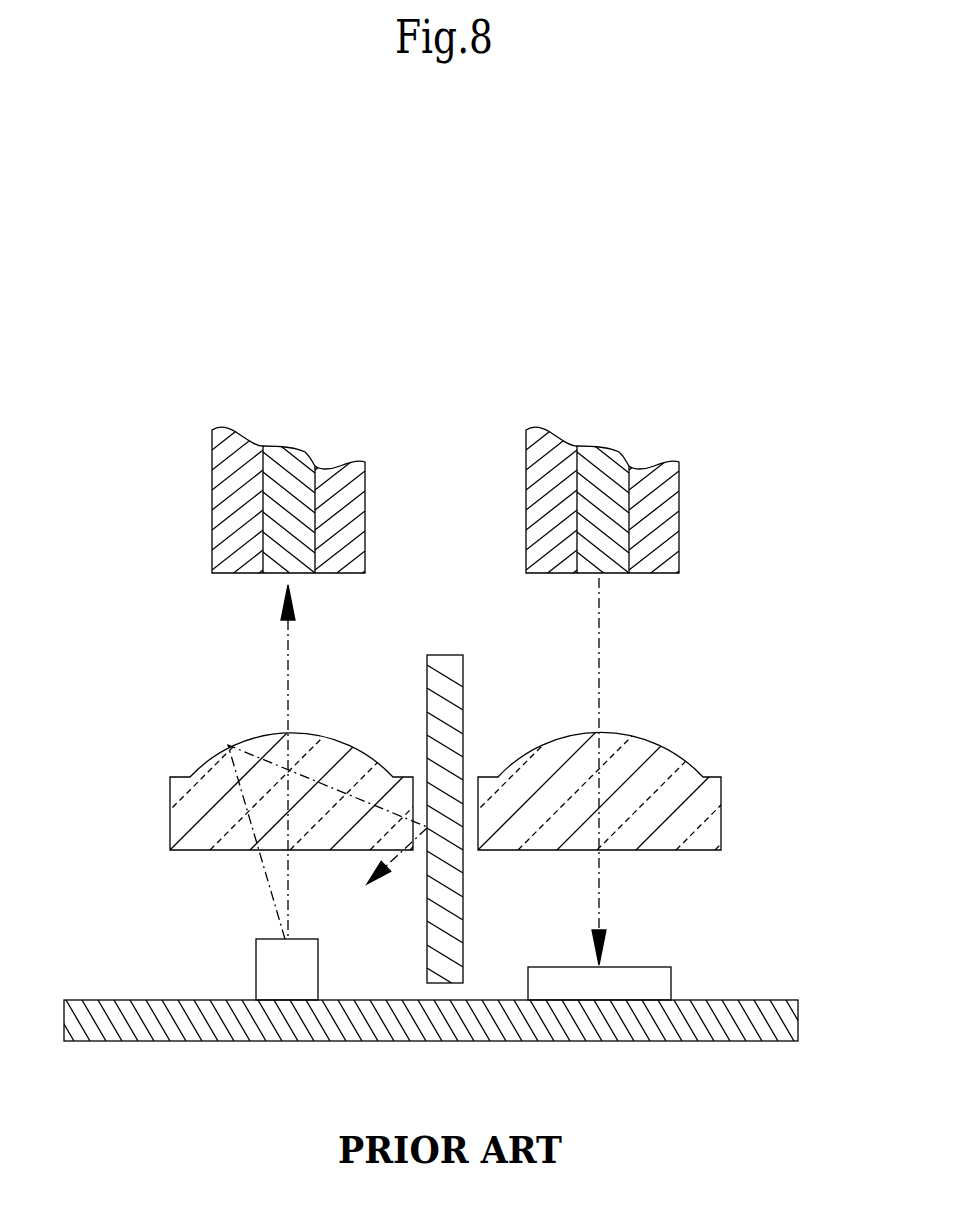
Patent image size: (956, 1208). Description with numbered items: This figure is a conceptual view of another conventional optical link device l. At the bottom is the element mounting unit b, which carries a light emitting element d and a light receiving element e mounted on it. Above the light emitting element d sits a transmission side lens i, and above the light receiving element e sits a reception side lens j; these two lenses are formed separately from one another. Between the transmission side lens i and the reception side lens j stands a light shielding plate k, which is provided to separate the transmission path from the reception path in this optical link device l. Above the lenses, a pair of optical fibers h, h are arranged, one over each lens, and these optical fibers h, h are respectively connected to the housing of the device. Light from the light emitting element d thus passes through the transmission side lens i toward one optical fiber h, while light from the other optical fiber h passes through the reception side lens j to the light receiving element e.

The optical fiber h is at (293, 456).
The optical link device l is at (760, 297).
The transmission side lens i is at (207, 751).
The reception side lens j is at (647, 737).
The light shielding plate k is at (447, 670).
The light emitting element d is at (267, 970).
The light receiving element e is at (638, 966).
The element mounting unit b is at (733, 1014).